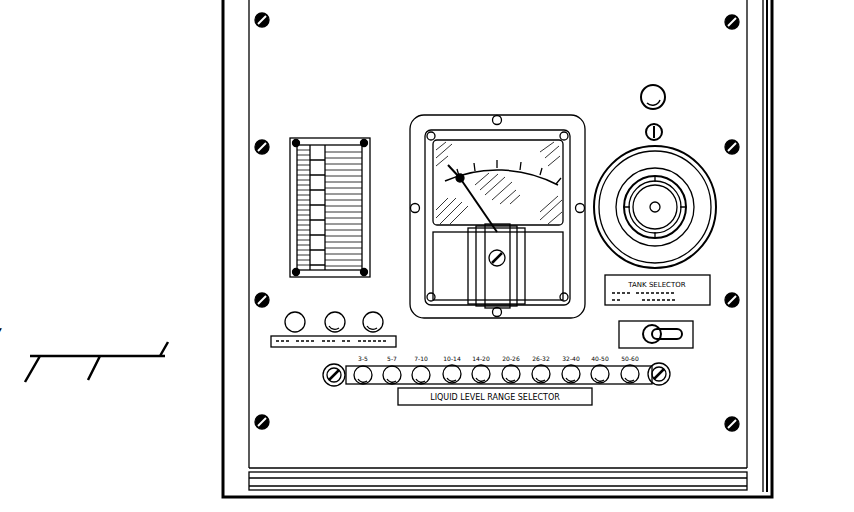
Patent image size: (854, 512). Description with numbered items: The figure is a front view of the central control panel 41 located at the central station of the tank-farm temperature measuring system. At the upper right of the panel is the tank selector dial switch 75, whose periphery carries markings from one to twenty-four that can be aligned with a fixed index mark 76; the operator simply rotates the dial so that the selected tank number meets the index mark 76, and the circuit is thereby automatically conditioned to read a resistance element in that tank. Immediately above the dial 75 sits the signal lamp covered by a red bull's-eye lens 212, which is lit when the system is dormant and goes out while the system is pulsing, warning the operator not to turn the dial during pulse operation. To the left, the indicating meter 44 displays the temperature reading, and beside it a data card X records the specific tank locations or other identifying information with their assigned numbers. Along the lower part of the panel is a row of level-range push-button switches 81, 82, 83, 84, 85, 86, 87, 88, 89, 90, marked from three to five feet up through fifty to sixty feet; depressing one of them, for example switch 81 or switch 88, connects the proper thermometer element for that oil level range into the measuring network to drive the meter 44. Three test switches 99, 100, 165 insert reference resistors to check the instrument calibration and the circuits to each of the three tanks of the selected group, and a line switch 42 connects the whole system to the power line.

The central control panel 41 is at (735, 44).
The indicating meter 44 is at (543, 137).
The red bull's-eye lens 212 is at (666, 95).
The fixed index mark 76 is at (663, 131).
The dial switch 75 is at (624, 162).
The data card X is at (330, 138).
The test switch 100 is at (333, 312).
The test switch 165 is at (372, 312).
The test switch 99 is at (296, 330).
The line switch 42 is at (688, 340).
The push-button switch 81 is at (366, 384).
The push-button switch 82 is at (394, 384).
The push-button switch 83 is at (421, 384).
The push-button switch 84 is at (452, 366).
The push-button switch 85 is at (481, 384).
The push-button switch 86 is at (511, 366).
The push-button switch 87 is at (541, 384).
The push-button switch 88 is at (571, 366).
The push-button switch 89 is at (600, 384).
The push-button switch 90 is at (630, 384).